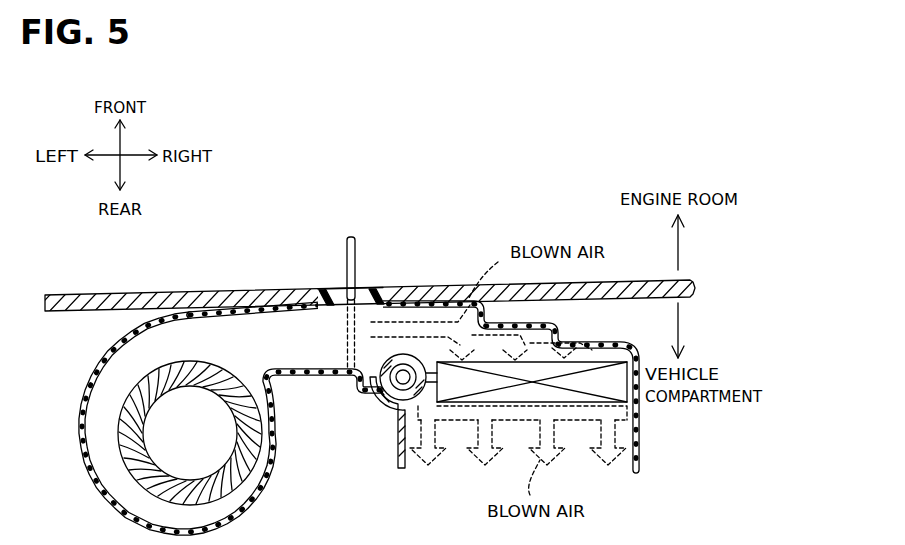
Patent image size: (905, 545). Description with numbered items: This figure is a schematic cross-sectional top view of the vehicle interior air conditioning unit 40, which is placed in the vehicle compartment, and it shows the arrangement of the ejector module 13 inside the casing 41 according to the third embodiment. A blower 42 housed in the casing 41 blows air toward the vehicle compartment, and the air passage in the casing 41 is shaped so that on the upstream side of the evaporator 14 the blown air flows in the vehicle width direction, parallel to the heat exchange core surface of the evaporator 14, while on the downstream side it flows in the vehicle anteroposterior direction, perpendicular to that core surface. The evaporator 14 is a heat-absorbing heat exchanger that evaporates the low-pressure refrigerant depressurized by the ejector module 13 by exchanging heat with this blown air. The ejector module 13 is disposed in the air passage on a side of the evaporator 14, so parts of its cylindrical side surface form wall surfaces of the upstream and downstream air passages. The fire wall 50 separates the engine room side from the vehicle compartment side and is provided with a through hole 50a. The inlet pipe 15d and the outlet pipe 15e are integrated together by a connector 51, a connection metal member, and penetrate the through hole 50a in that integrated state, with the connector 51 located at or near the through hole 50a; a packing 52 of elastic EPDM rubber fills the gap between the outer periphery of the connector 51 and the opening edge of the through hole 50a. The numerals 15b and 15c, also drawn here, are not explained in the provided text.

The ejector module 13 is at (378, 405).
The evaporator 14 is at (606, 378).
The first fixing portion 15b is at (343, 253).
The first fixing portion 15c is at (334, 274).
The inlet pipe 15d is at (376, 446).
The outlet pipe 15e is at (387, 422).
The vehicle interior air conditioning unit 40 is at (200, 423).
The casing 41 is at (96, 483).
The blower 42 is at (118, 432).
The fire wall 50 is at (389, 259).
The through hole 50a is at (382, 279).
The connector 51 is at (336, 281).
The packing 52 is at (374, 279).